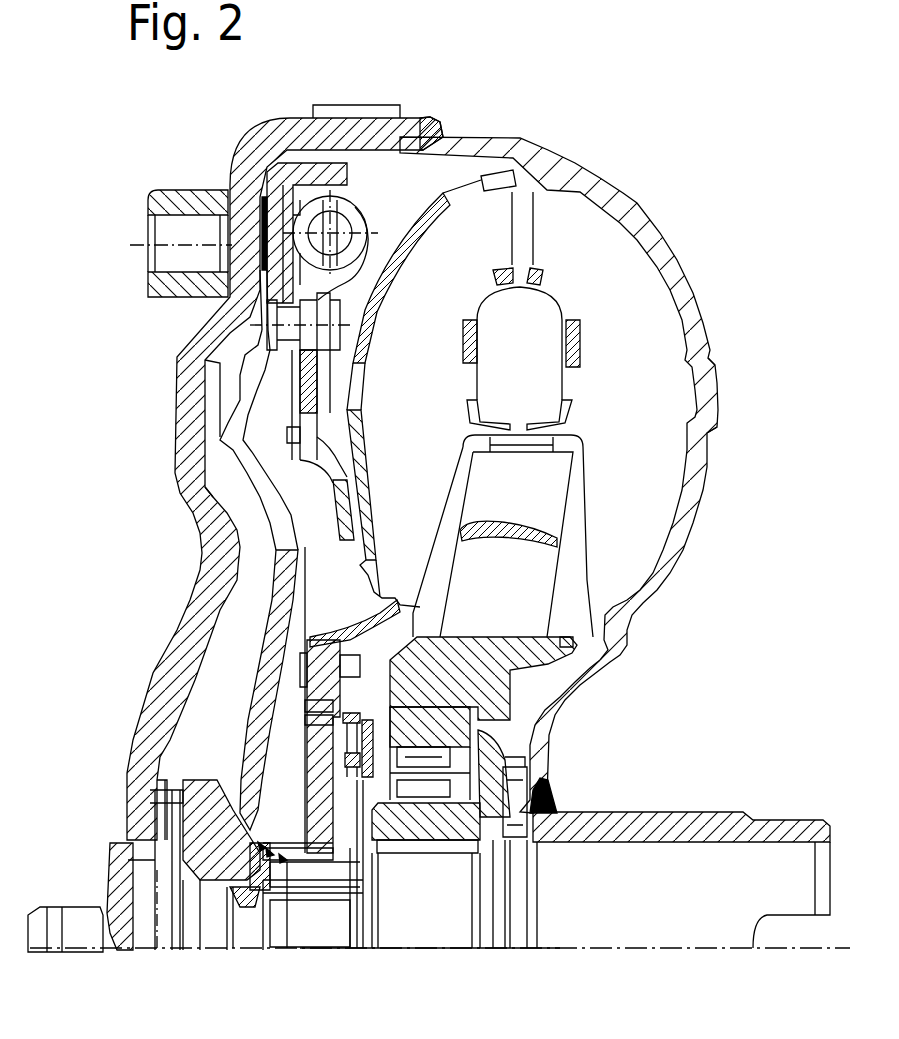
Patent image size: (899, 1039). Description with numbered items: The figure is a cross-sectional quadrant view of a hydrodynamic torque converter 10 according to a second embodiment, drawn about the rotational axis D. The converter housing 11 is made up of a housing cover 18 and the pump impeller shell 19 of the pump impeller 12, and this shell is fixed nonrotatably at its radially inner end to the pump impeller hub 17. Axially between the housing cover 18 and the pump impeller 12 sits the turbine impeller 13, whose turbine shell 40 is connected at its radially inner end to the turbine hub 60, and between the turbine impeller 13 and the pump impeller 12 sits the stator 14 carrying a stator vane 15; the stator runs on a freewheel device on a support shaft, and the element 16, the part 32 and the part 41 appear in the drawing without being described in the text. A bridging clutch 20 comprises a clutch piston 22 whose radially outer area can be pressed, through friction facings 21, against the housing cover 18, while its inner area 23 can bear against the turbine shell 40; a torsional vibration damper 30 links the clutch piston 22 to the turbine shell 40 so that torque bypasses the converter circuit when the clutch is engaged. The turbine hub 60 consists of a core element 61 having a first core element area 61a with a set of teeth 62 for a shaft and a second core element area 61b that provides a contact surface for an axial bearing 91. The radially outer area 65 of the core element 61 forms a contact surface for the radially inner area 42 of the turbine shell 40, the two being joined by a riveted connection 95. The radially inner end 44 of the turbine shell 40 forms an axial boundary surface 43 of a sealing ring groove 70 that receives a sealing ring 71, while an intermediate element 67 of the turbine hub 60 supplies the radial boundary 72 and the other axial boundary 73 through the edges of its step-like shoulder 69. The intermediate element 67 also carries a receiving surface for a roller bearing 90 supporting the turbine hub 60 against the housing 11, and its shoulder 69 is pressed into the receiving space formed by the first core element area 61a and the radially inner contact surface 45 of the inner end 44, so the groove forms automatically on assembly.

The hydrodynamic torque converter 10 is at (500, 86).
The converter housing 11 is at (672, 250).
The pump impeller 12 is at (632, 372).
The turbine impeller 13 is at (442, 301).
The stator 14 is at (535, 494).
The stator vane 15 is at (512, 530).
The turbine hub 16 is at (510, 643).
The pump impeller hub 17 is at (688, 902).
The housing cover 18 is at (175, 394).
The pump impeller shell 19 is at (690, 289).
The bridging clutch 20 is at (240, 378).
The friction facings 21 is at (262, 196).
The clutch piston 22 is at (237, 453).
The inner area of the clutch piston 23 is at (227, 768).
The torsional vibration damper 30 is at (382, 204).
The stator wheel 32 is at (357, 497).
The turbine shell 40 is at (363, 337).
The seal 41 is at (295, 838).
The radially inner area of the turbine shell 42 is at (298, 753).
The axial boundary surface 43 is at (340, 874).
The radially inner end of the turbine shell 44 is at (300, 863).
The radially inner contact surface 45 is at (283, 857).
The turbine hub 60 is at (210, 903).
The core element 61 is at (345, 850).
The first core element area 61a is at (333, 883).
The second core element area 61b is at (317, 717).
The set of teeth 62 is at (283, 900).
The radially outer area of the core element 65 is at (320, 703).
The intermediate element 67 is at (200, 870).
The step-like shoulder 69 is at (230, 890).
The sealing ring groove 70 is at (270, 852).
The sealing ring 71 is at (262, 845).
The radial boundary 72 is at (237, 890).
The axial boundary 73 is at (283, 858).
The roller bearing 90 is at (167, 832).
The axial bearing 91 is at (357, 708).
The riveted connection 95 is at (340, 673).
The rotational axis D is at (540, 948).